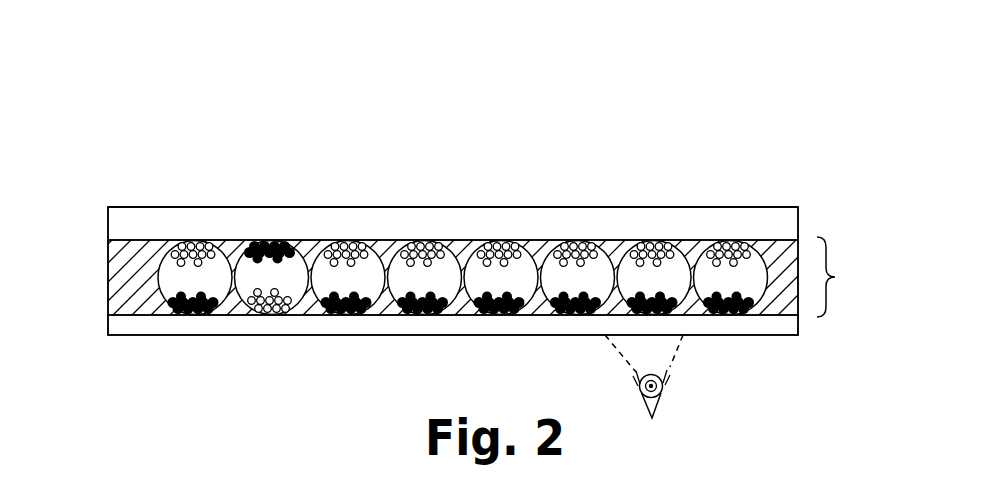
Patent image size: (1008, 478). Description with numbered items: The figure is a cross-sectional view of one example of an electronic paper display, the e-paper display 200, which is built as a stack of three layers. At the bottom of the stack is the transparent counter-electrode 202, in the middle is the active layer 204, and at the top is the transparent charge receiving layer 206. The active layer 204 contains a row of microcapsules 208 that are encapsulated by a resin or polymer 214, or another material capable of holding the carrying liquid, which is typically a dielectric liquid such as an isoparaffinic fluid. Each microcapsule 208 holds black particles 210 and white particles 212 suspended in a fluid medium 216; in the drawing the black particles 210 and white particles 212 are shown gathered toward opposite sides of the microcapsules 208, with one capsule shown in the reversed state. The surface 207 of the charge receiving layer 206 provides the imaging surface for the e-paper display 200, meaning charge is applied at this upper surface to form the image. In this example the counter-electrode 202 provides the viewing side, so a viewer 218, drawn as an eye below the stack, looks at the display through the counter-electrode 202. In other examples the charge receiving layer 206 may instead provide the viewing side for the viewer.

The e-paper display 200 is at (468, 100).
The transparent counter-electrode 202 is at (793, 327).
The active layer 204 is at (847, 277).
The transparent charge receiving layer 206 is at (793, 228).
The surface 207 is at (505, 207).
The microcapsules 208 is at (252, 242).
The black particles 210 is at (178, 315).
The white particles 212 is at (170, 242).
The resin or polymer 214 is at (115, 279).
The fluid medium 216 is at (305, 272).
The viewer 218 is at (658, 403).